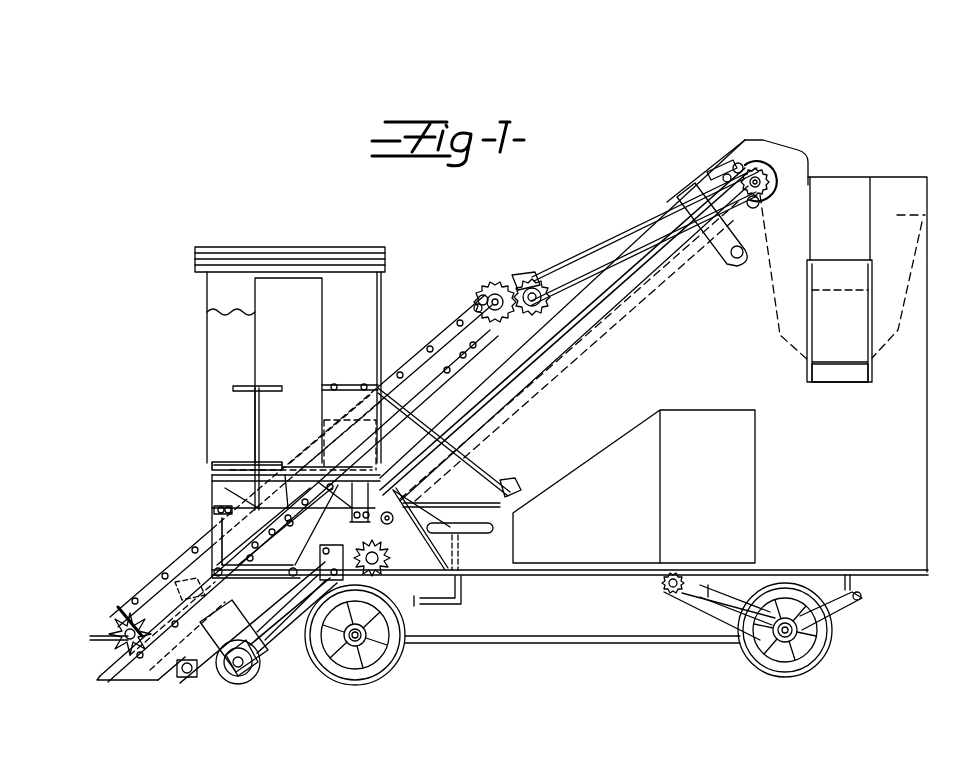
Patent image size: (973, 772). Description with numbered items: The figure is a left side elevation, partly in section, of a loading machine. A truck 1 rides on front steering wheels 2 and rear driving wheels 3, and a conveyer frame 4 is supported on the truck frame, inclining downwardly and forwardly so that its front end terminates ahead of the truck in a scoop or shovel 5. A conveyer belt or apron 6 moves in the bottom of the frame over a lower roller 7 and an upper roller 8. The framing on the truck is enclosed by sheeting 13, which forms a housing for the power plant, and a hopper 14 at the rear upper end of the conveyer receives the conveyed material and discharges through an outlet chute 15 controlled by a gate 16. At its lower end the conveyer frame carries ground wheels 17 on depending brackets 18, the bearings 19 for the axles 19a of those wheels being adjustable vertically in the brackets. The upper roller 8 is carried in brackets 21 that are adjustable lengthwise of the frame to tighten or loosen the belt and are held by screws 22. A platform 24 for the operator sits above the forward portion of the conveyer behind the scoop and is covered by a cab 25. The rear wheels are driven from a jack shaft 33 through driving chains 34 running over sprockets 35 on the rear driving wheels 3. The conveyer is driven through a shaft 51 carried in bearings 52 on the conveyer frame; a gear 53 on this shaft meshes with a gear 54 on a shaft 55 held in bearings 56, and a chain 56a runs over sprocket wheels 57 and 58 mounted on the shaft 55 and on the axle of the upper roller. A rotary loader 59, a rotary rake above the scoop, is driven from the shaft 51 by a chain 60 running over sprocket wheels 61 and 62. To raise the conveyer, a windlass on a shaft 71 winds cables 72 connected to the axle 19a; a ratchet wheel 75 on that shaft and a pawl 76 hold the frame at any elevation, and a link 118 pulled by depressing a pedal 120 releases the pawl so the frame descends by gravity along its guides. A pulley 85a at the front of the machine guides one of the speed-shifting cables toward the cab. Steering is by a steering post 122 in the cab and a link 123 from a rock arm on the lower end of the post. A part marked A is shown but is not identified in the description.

The truck 1 is at (535, 579).
The front steering wheels 2 is at (388, 655).
The rear driving wheels 3 is at (752, 655).
The conveyer frame 4 is at (650, 230).
The scoop or shovel 5 is at (108, 672).
The conveyer belt or apron 6 is at (300, 618).
The roller 7 is at (182, 676).
The roller 8 is at (768, 178).
The sheeting 13 is at (788, 374).
The hopper 14 is at (921, 282).
The outlet chute 15 is at (858, 366).
The gate 16 is at (839, 321).
The ground wheels 17 is at (262, 660).
The brackets 18 is at (222, 662).
The bearings 19 is at (238, 684).
The axle 19a is at (766, 170).
The brackets 21 is at (745, 150).
The screws 22 is at (728, 170).
The platform 24 is at (215, 464).
The cab 25 is at (290, 250).
The jack shaft 33 is at (662, 586).
The driving chains 34 is at (680, 603).
The sprockets 35 is at (745, 618).
The shaft 51 is at (490, 295).
The bearings 52 is at (480, 300).
The gear 53 is at (474, 308).
The gear 54 is at (525, 275).
The shaft 55 is at (492, 332).
The bearings 56 is at (540, 282).
The chain or belt 56a is at (590, 248).
The sprocket wheel 57 is at (548, 287).
The sprocket wheel 58 is at (760, 203).
The rotary loader 59 is at (110, 636).
The belt or chain 60 is at (413, 350).
The sprocket wheel 61 is at (465, 325).
The sprocket wheel 62 is at (118, 630).
The shaft 71 is at (385, 575).
The cables 72 is at (293, 620).
The ratchet wheel 75 is at (392, 558).
The pawl 76 is at (390, 522).
The pulley 85a is at (216, 510).
The link 118 is at (250, 584).
The pedal 120 is at (322, 433).
The steering post 122 is at (256, 413).
The link 123 is at (214, 481).
The shaft A is at (222, 620).